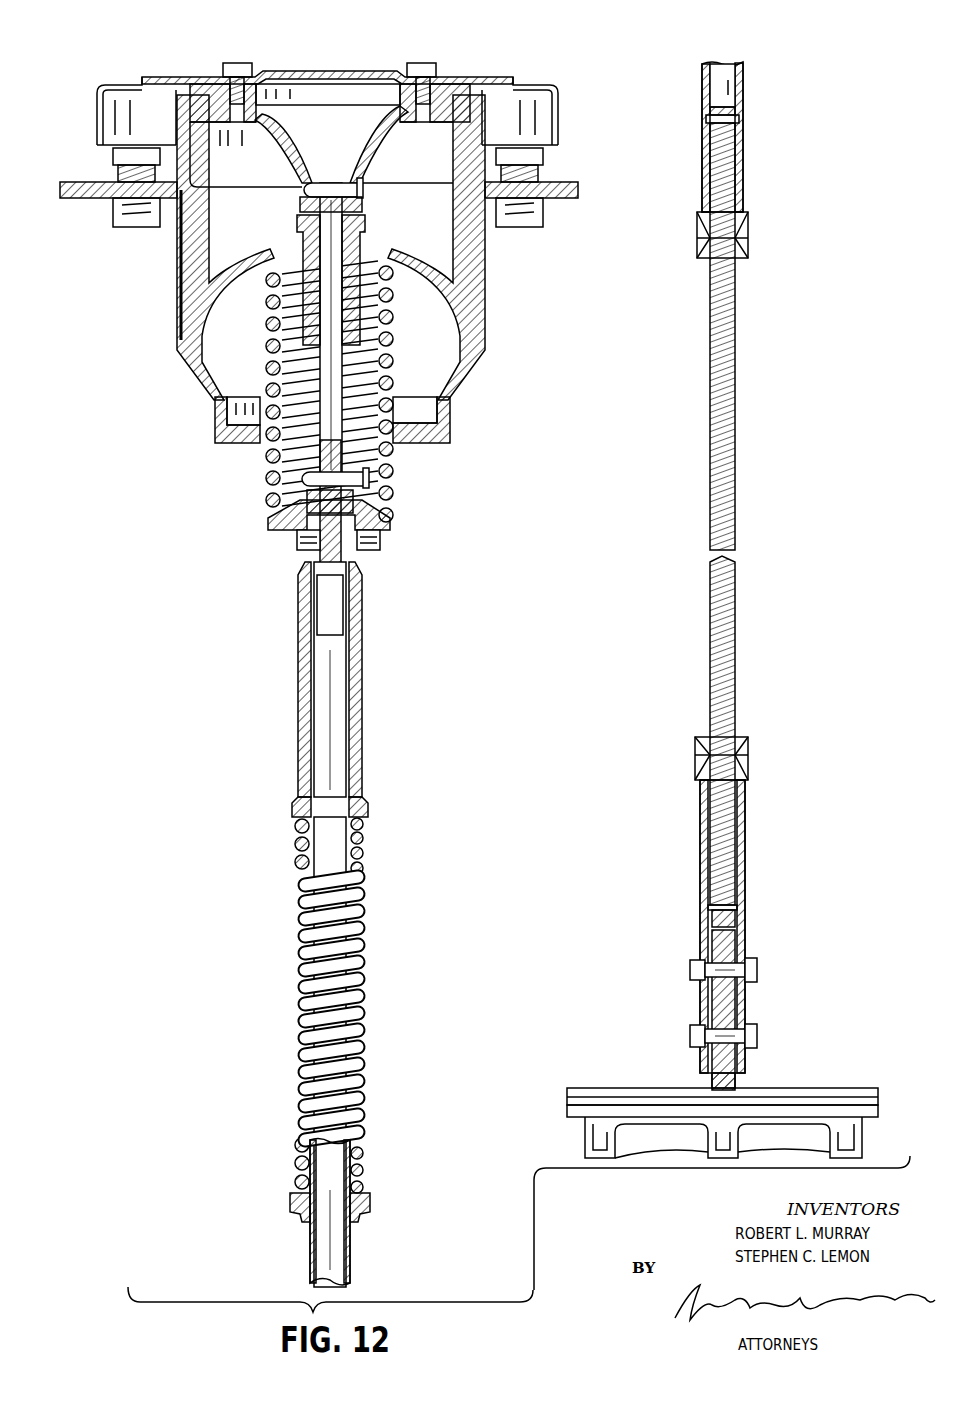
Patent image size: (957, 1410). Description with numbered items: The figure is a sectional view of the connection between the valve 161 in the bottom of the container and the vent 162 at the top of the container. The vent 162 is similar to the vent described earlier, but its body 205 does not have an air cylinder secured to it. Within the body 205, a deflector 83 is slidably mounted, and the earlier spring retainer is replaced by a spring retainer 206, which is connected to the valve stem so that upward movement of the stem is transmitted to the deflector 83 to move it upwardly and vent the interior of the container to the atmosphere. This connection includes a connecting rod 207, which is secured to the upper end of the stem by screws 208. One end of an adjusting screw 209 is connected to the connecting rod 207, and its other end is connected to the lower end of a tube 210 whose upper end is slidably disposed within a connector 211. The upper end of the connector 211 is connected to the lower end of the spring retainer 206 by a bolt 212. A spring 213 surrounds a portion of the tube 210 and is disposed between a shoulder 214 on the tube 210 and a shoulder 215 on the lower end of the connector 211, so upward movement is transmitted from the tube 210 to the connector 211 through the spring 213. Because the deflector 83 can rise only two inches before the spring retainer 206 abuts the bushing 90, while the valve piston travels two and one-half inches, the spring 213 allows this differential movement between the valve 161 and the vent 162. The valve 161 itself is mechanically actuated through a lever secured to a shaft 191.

The deflector 83 is at (386, 147).
The body 205 is at (486, 254).
The vent 162 is at (494, 300).
The bushing 90 is at (392, 362).
The spring retainer 206 is at (391, 523).
The bolt 212 is at (296, 545).
The connector 211 is at (363, 724).
The shoulder 215 is at (370, 810).
The tube 210 is at (365, 844).
The spring 213 is at (366, 870).
The shoulder 214 is at (370, 1197).
The adjusting screw 209 is at (736, 549).
The connecting rod 207 is at (746, 883).
The screws 208 is at (690, 971).
The shaft 191 is at (736, 1082).
The valve 161 is at (840, 1086).